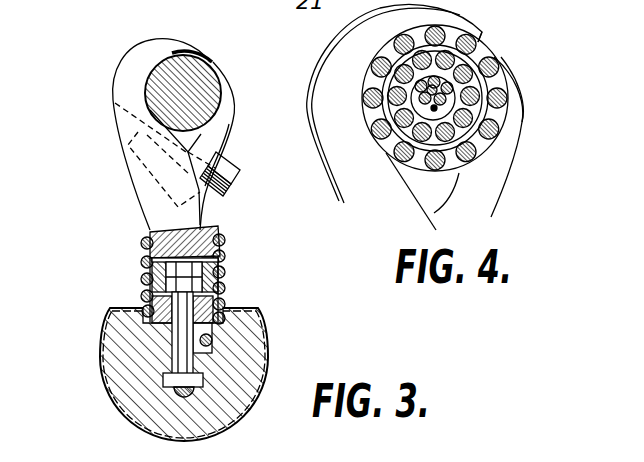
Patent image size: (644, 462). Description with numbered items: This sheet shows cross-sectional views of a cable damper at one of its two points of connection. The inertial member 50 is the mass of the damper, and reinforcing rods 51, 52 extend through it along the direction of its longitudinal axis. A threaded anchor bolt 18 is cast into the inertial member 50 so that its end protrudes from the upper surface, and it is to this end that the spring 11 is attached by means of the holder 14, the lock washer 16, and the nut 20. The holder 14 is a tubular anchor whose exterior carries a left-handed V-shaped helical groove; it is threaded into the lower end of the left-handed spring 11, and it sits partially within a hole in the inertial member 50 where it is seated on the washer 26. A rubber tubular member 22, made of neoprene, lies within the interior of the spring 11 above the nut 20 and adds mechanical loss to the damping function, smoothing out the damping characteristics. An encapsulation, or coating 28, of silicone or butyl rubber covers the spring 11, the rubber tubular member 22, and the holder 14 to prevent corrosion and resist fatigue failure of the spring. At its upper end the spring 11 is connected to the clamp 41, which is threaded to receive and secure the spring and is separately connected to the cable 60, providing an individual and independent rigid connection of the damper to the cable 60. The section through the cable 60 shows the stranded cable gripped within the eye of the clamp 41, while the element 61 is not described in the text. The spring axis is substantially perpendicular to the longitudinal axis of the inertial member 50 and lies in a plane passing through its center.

In FIG. 3, the spring 11 is at (225, 240).
In FIG. 3, the holder 14 is at (223, 300).
In FIG. 3, the lock washer 16 is at (143, 300).
In FIG. 3, the anchor bolt 18 is at (178, 360).
In FIG. 3, the nut 20 is at (143, 272).
In FIG. 3, the rubber tubular member 22 is at (227, 275).
In FIG. 3, the washer 26 is at (180, 331).
In FIG. 3, the encapsulation (coating) 28 is at (225, 228).
In FIG. 3, the clamp 41 is at (125, 95).
In FIG. 4, the clamp 41 is at (518, 155).
In FIG. 3, the inertial member 50 is at (257, 365).
In FIG. 3, the reinforcing rod 51 is at (223, 432).
In FIG. 3, the reinforcing rod 52 is at (207, 339).
In FIG. 3, the cable 60 is at (197, 92).
In FIG. 4, the cable 60 is at (487, 92).
In FIG. 3, the lip 61 is at (178, 55).
In FIG. 4, the lip 61 is at (480, 45).